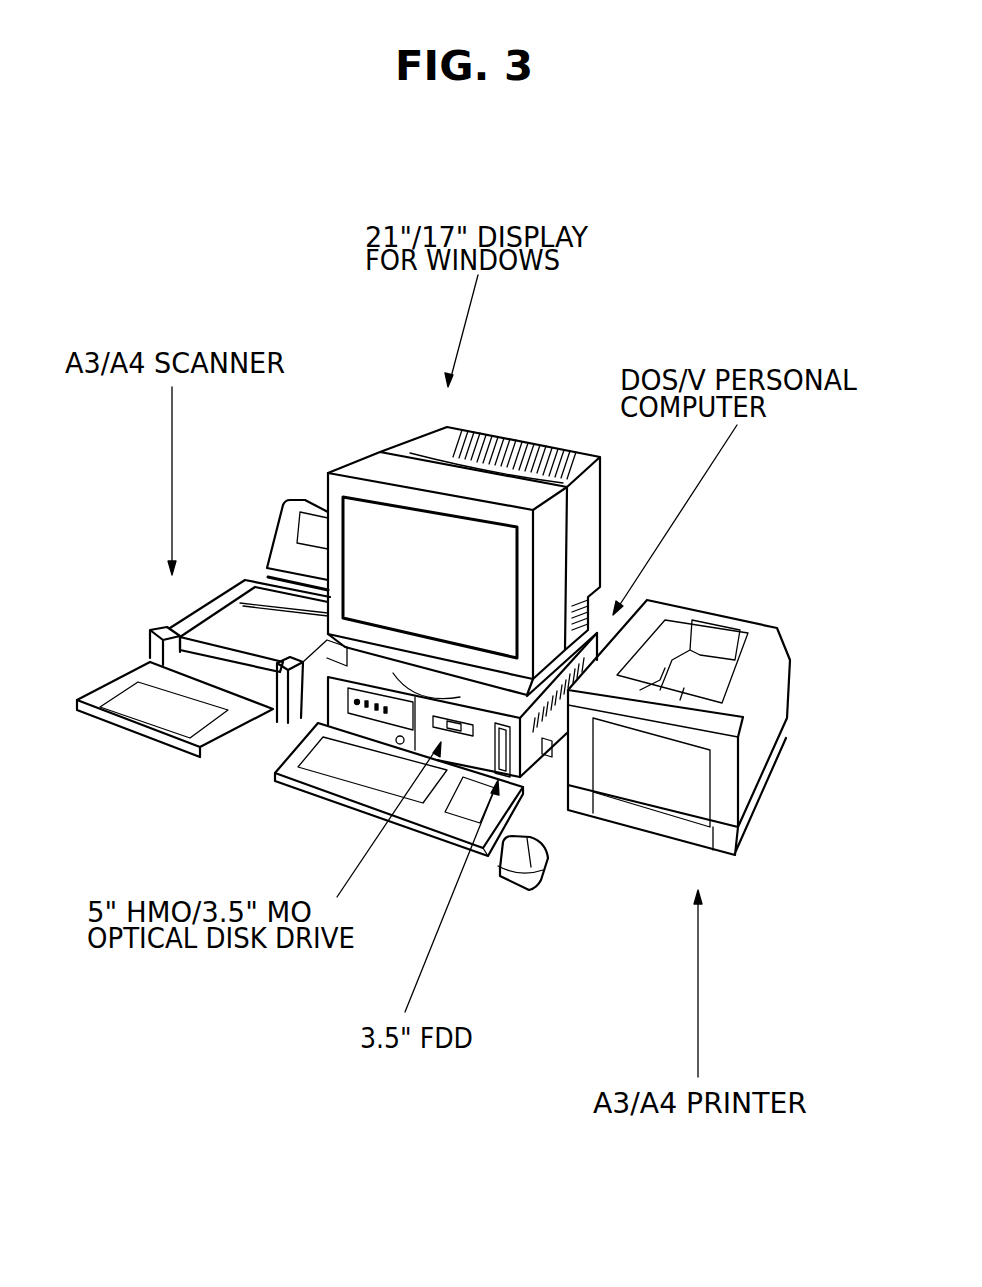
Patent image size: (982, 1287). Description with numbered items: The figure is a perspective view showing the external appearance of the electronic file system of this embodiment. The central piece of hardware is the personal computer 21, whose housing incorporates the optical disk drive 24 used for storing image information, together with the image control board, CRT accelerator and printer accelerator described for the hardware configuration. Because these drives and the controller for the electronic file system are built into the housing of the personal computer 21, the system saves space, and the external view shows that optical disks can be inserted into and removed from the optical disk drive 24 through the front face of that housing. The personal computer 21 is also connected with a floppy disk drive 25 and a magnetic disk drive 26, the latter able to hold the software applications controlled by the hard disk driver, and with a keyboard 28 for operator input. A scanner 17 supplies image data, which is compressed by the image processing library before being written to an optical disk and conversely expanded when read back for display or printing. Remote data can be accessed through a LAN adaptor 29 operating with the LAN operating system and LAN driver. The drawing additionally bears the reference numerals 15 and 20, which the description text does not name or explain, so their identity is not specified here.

The 21"/17" display for Windows 15 is at (528, 217).
The scanner 17 is at (160, 627).
The A3/A4 printer 20 is at (642, 833).
The personal computer 21 is at (454, 807).
The optical disk drive 24 is at (309, 871).
The floppy disk drive 25 is at (453, 726).
The magnetic disk drive 26 is at (412, 1053).
The keyboard 28 is at (540, 888).
The LAN adaptor 29 is at (283, 778).